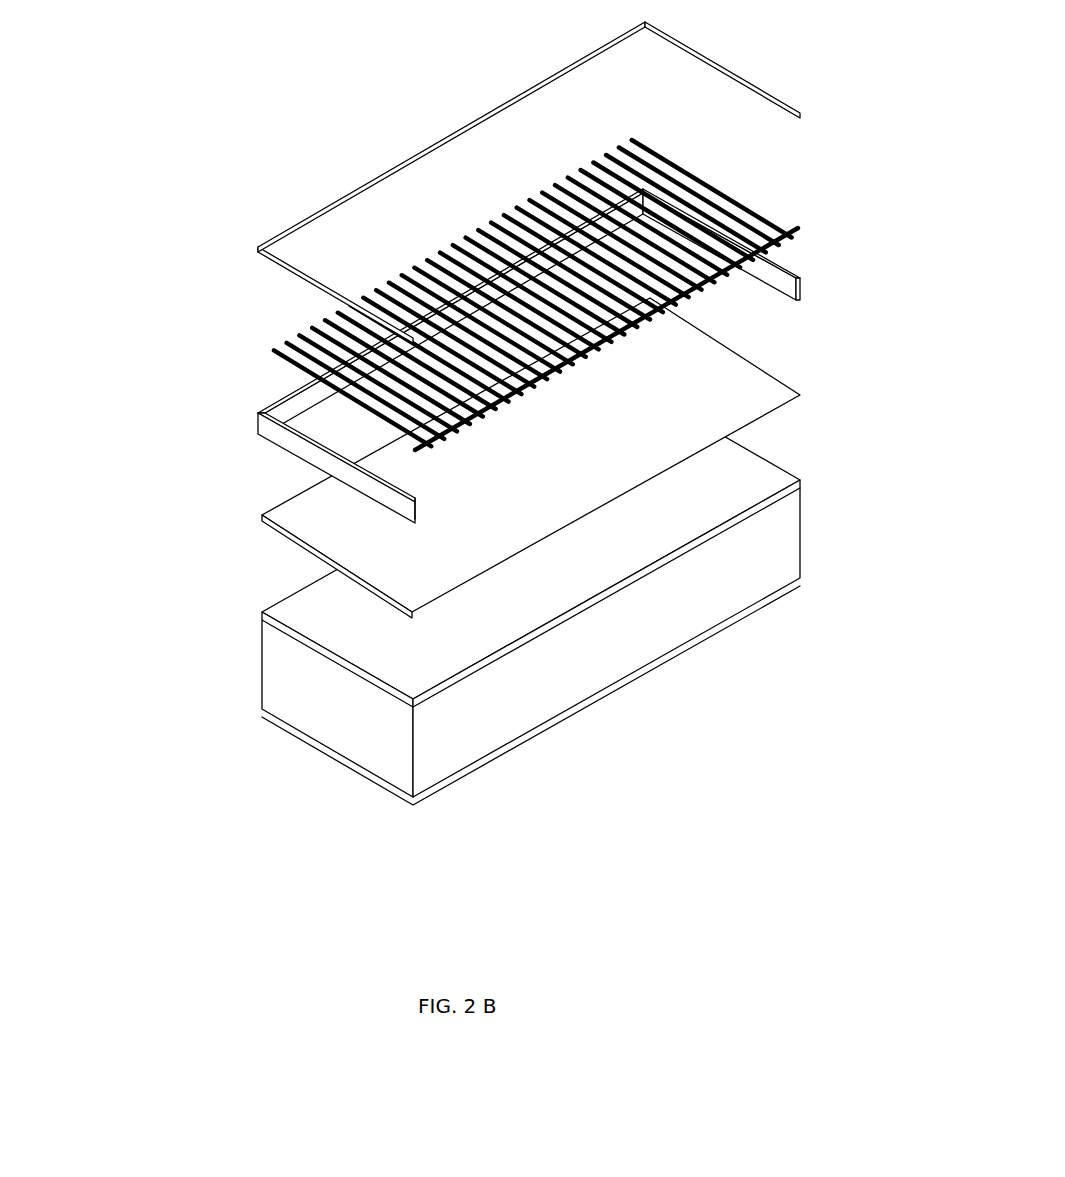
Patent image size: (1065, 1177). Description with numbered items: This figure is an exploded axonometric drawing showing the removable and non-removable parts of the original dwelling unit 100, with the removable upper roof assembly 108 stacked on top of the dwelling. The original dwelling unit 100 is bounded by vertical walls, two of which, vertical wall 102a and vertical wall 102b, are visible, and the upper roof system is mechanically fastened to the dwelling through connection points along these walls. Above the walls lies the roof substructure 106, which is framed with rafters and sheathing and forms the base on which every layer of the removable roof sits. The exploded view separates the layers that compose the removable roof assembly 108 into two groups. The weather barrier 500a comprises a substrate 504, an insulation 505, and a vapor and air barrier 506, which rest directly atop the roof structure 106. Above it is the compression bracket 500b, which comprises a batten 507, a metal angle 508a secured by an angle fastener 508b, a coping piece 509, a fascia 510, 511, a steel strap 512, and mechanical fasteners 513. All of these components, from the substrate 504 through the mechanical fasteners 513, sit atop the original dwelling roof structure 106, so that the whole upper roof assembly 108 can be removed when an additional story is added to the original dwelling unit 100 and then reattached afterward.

The original dwelling unit 100 is at (518, 644).
The vertical wall 102a is at (256, 642).
The vertical wall 102b is at (525, 690).
The roof substructure 106 is at (750, 468).
The removable upper roof assembly 108 is at (828, 265).
The weather barrier 500a is at (414, 403).
The compression bracket 500b is at (412, 236).
The substrate 504 is at (451, 458).
The insulation 505 is at (451, 458).
The vapor and air barrier 506 is at (256, 526).
The batten 507 is at (282, 320).
The metal angle 508a is at (449, 182).
The angle fastener 508b is at (449, 182).
The coping piece 509 is at (332, 198).
The fascia 510 is at (451, 356).
The fascia 511 is at (451, 356).
The steel strap 512 is at (451, 356).
The mechanical fasteners 513 is at (254, 412).